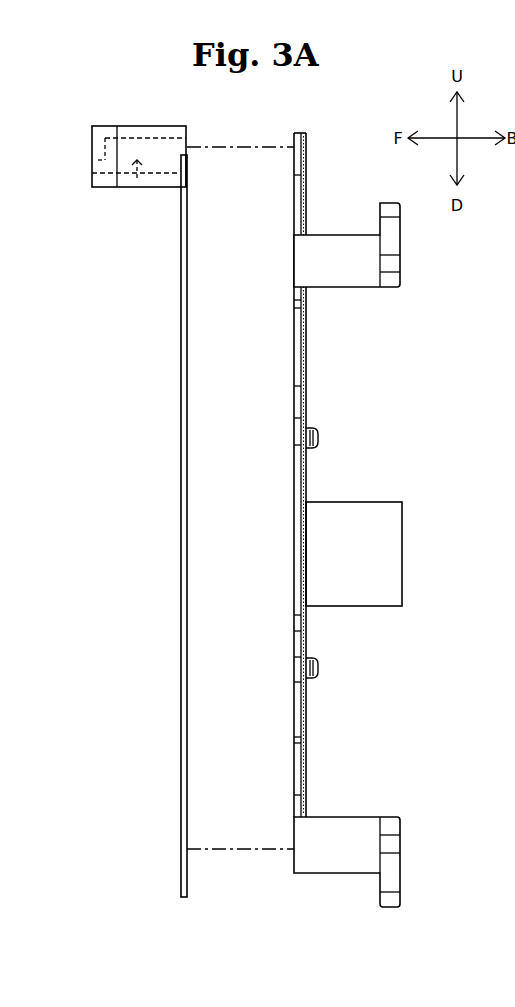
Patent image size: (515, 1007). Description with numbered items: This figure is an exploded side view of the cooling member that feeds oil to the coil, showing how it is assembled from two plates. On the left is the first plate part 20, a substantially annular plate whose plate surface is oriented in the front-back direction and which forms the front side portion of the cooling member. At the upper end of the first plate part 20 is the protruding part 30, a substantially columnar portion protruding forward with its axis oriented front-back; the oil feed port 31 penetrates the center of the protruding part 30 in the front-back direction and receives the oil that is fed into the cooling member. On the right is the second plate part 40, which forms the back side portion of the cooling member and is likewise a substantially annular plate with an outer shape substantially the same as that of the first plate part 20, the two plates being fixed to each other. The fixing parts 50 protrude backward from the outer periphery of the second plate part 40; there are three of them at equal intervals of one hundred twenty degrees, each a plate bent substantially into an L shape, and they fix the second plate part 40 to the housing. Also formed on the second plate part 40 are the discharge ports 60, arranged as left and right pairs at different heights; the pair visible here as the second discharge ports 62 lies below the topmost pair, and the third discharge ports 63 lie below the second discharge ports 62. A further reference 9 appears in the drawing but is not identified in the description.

The display device 9 is at (509, 518).
The first plate part 20 is at (158, 353).
The protruding part 30 is at (148, 125).
The oil feed port 31 is at (137, 178).
The second plate part 40 is at (345, 353).
The fixing parts 50 is at (401, 275).
The discharge ports 60 is at (362, 552).
The second discharge ports 62 is at (319, 437).
The third discharge ports 63 is at (319, 667).